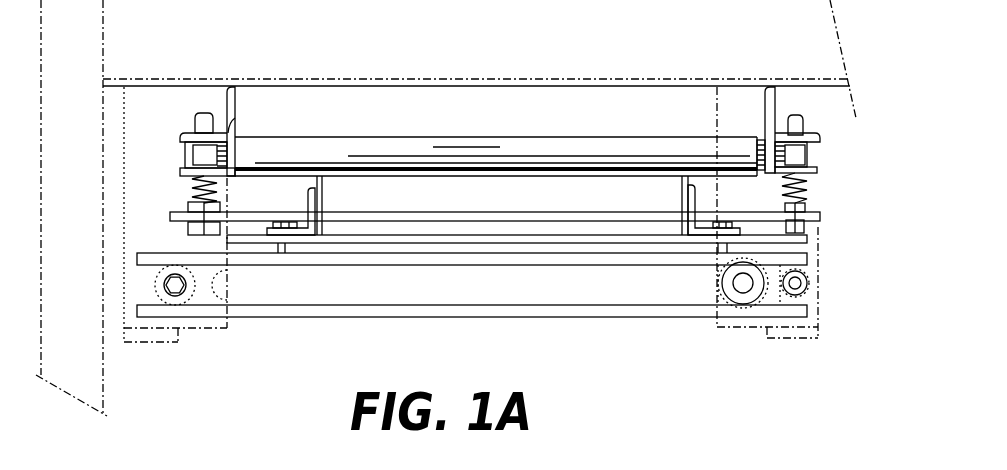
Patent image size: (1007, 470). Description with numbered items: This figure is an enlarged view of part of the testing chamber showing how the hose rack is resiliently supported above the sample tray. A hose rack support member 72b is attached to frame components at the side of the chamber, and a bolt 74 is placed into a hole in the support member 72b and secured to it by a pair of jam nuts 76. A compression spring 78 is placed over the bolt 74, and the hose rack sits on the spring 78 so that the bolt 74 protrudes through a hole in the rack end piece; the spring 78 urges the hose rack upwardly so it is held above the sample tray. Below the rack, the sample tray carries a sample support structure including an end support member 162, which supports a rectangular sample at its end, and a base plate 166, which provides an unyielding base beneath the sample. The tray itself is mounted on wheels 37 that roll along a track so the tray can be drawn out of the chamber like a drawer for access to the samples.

The bolt 74 is at (797, 114).
The compression spring 78 is at (805, 189).
The jam nuts 76 is at (812, 205).
The end support member 162 is at (312, 198).
The hose rack support member 72b is at (400, 215).
The base plate 166 is at (557, 238).
The wheels 37 is at (190, 295).